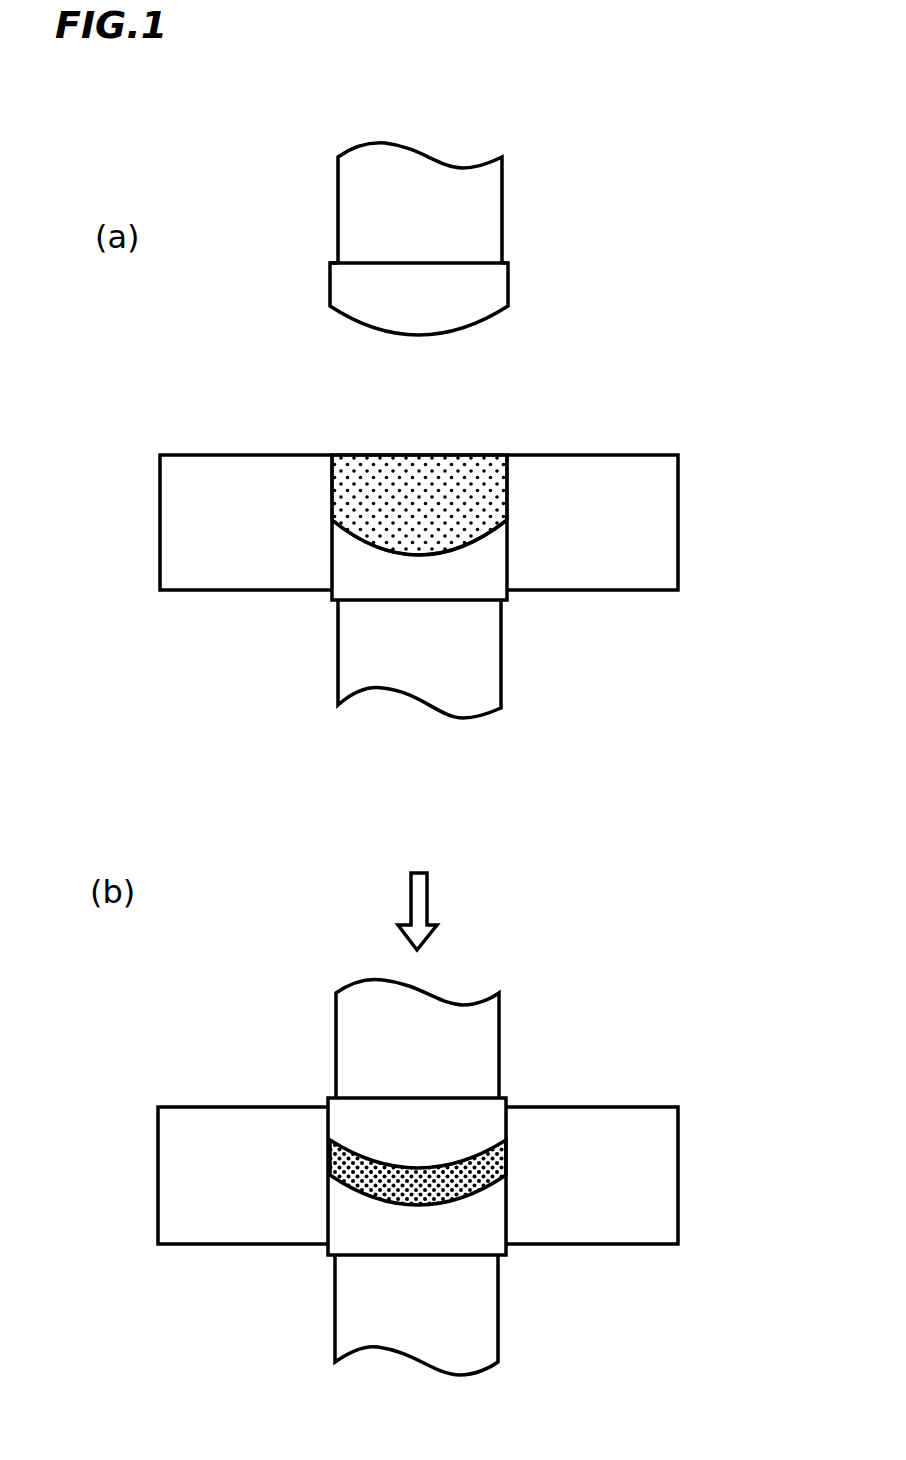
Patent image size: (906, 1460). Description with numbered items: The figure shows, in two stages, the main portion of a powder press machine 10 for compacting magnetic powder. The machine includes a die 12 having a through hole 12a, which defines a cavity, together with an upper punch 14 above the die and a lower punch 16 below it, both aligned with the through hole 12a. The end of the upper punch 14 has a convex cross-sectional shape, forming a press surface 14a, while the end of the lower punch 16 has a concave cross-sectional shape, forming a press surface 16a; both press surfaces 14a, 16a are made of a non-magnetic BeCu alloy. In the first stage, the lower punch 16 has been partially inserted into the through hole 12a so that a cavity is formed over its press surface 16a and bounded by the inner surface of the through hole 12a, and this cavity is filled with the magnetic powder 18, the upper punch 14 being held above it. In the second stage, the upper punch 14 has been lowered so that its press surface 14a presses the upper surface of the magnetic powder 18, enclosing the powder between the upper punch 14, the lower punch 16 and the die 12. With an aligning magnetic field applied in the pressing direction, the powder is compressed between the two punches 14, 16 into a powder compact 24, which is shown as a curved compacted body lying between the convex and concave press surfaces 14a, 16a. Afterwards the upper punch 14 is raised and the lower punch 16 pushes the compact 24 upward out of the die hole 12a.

The powder press machine 10 is at (279, 252).
The die 12 is at (678, 512).
The through hole 12a is at (349, 438).
The upper punch 14 is at (503, 226).
The press surface of the upper punch 14a is at (485, 320).
The lower punch 16 is at (501, 657).
The press surface of the lower punch 16a is at (408, 555).
The magnetic powder 18 is at (478, 455).
The powder compact 24 is at (388, 1193).